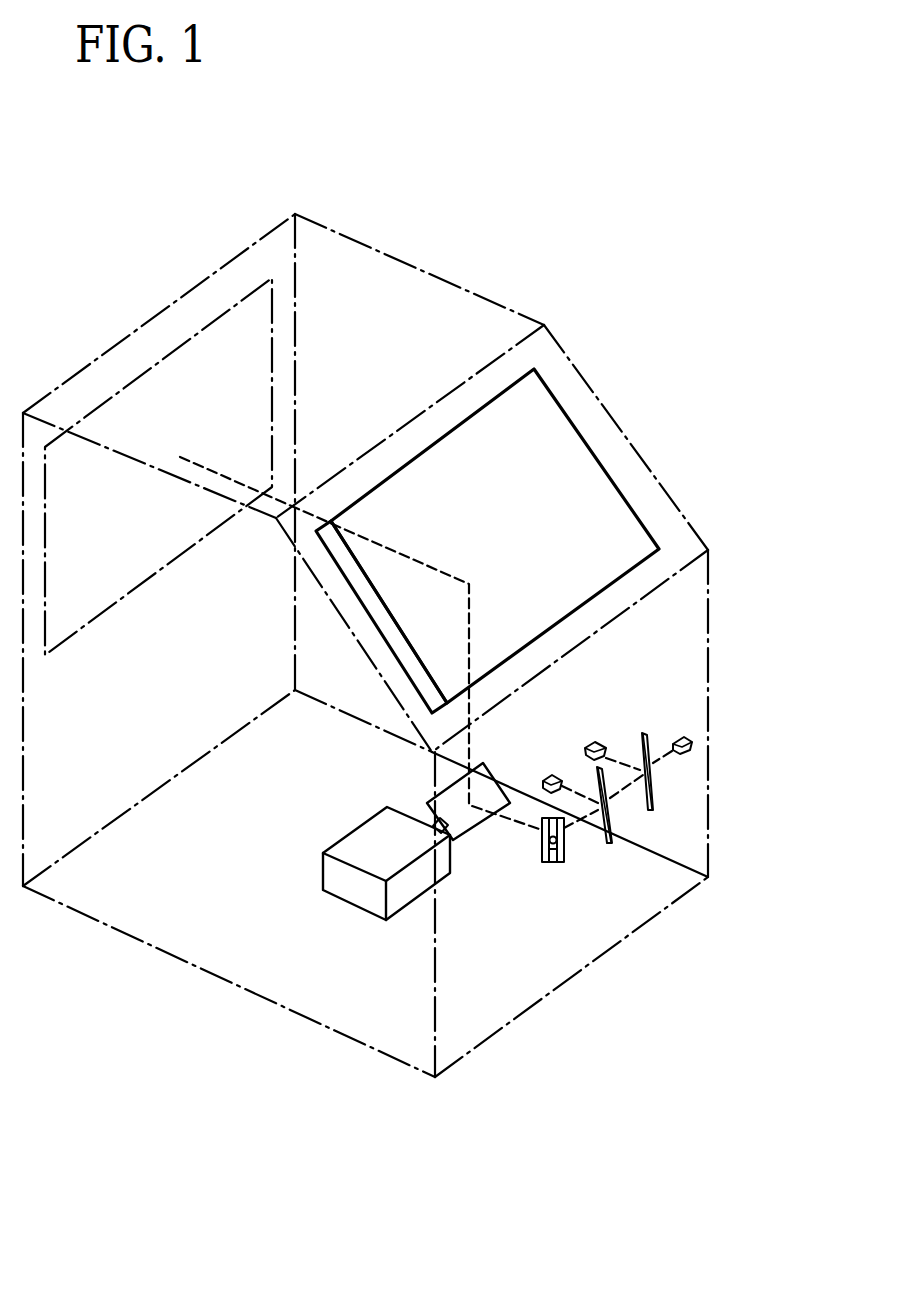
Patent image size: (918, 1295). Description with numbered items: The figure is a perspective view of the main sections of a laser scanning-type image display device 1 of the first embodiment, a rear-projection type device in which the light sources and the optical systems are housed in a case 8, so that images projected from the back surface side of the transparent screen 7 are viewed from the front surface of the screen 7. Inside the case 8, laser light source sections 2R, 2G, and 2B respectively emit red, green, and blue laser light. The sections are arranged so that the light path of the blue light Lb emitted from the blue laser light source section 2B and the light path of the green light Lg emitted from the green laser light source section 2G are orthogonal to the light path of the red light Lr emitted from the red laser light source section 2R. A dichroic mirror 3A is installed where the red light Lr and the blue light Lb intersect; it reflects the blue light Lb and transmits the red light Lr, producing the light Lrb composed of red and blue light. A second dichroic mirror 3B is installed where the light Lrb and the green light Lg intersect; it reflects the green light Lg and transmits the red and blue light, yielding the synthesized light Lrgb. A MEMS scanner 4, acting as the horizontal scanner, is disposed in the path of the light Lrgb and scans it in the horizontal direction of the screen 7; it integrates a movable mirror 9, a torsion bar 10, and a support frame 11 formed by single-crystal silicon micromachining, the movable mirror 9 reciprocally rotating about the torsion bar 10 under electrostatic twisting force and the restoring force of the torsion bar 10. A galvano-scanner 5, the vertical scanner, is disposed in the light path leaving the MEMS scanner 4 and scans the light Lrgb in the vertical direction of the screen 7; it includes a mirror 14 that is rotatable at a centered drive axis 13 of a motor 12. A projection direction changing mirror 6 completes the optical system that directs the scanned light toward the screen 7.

The laser scanning-type image display device 1 is at (512, 235).
The blue laser light source section 2B is at (595, 745).
The green laser light source section 2G is at (543, 782).
The red laser light source section 2R is at (690, 750).
The dichroic mirror 3A is at (653, 791).
The dichroic mirror 3B is at (620, 807).
The MEMS scanner 4 is at (538, 865).
The galvano-scanner 5 is at (353, 920).
The projection direction changing mirror 6 is at (573, 479).
The screen 7 is at (140, 375).
The case 8 is at (374, 301).
The movable mirror 9 is at (542, 841).
The torsion bar 10 is at (546, 863).
The support frame 11 is at (565, 853).
The motor 12 is at (370, 842).
The drive axis 13 is at (436, 822).
The mirror 14 is at (466, 826).
The blue light Lb is at (628, 762).
The green light Lg is at (577, 790).
The red light Lr is at (667, 750).
The light composed of red light and blue light Lrb is at (627, 787).
The synthesized light Lrgb is at (578, 828).